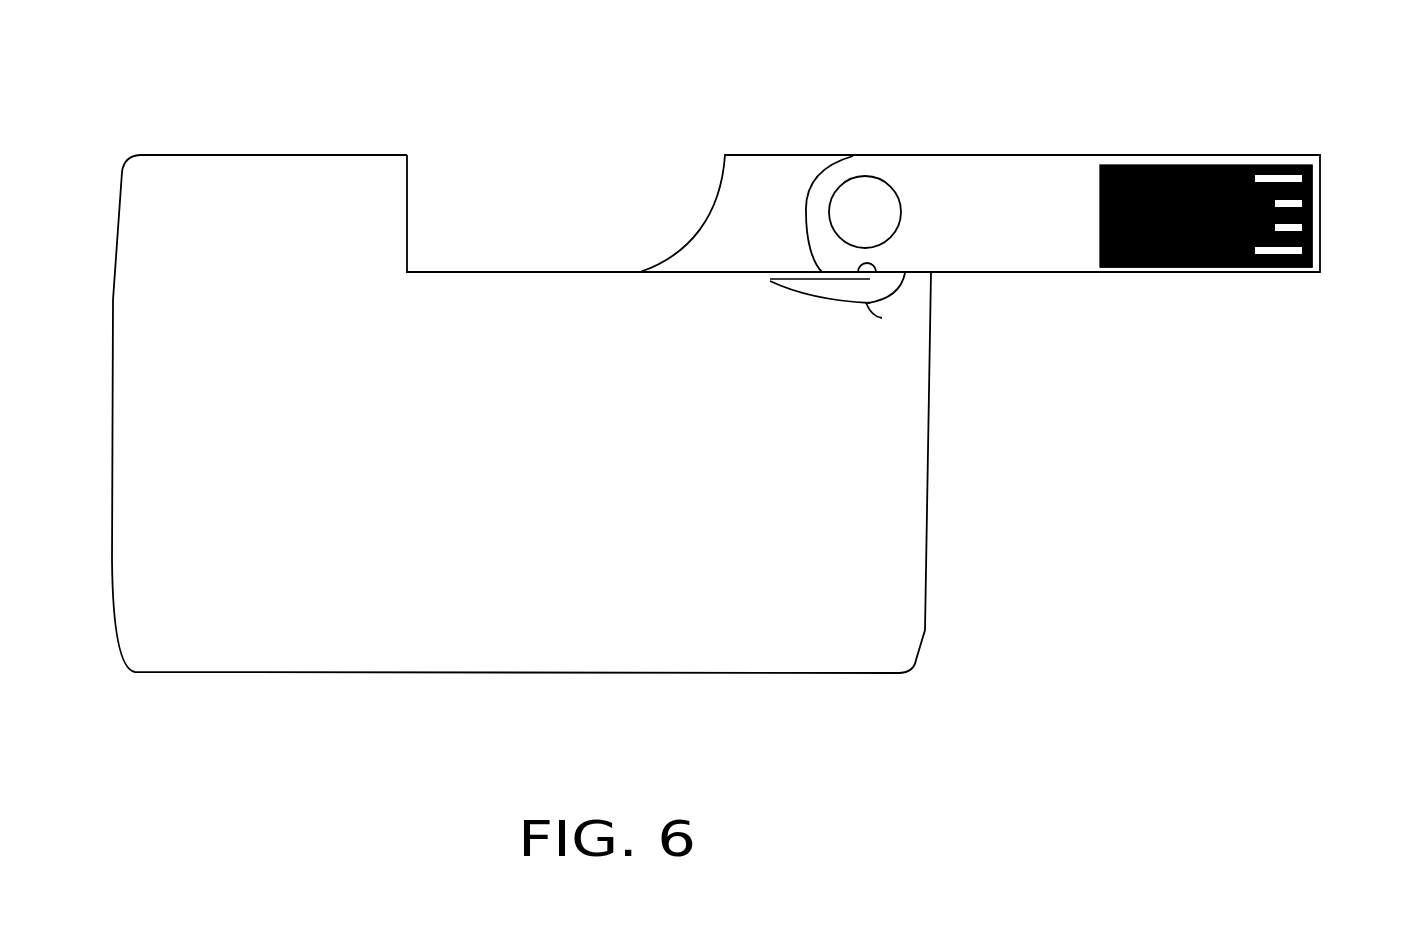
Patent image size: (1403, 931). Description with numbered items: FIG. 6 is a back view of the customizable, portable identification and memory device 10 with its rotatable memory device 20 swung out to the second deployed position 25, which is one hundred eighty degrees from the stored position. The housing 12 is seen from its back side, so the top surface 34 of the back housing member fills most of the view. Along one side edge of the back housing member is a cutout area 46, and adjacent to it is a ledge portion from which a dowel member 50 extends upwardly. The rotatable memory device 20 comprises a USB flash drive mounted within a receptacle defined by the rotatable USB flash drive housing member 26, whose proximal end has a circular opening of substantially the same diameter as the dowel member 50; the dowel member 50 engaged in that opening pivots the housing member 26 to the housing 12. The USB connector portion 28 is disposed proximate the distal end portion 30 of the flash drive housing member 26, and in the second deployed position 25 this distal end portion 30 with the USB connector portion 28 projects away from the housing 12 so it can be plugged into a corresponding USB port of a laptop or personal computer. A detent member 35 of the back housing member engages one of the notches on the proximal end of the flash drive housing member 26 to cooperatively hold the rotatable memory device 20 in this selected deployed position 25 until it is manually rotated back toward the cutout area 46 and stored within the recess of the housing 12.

The customizable, portable identification and memory device 10 is at (975, 443).
The housing 12 is at (933, 533).
The rotatable memory device 20 is at (1184, 157).
The second deployed position 25 is at (1117, 130).
The rotatable USB flash drive housing member 26 is at (1045, 172).
The USB connector portion 28 is at (1291, 167).
The distal end portion 30 is at (1270, 273).
The top surface 34 is at (548, 462).
The detent member 35 is at (880, 318).
The cutout area 46 is at (493, 202).
The dowel member 50 is at (867, 205).